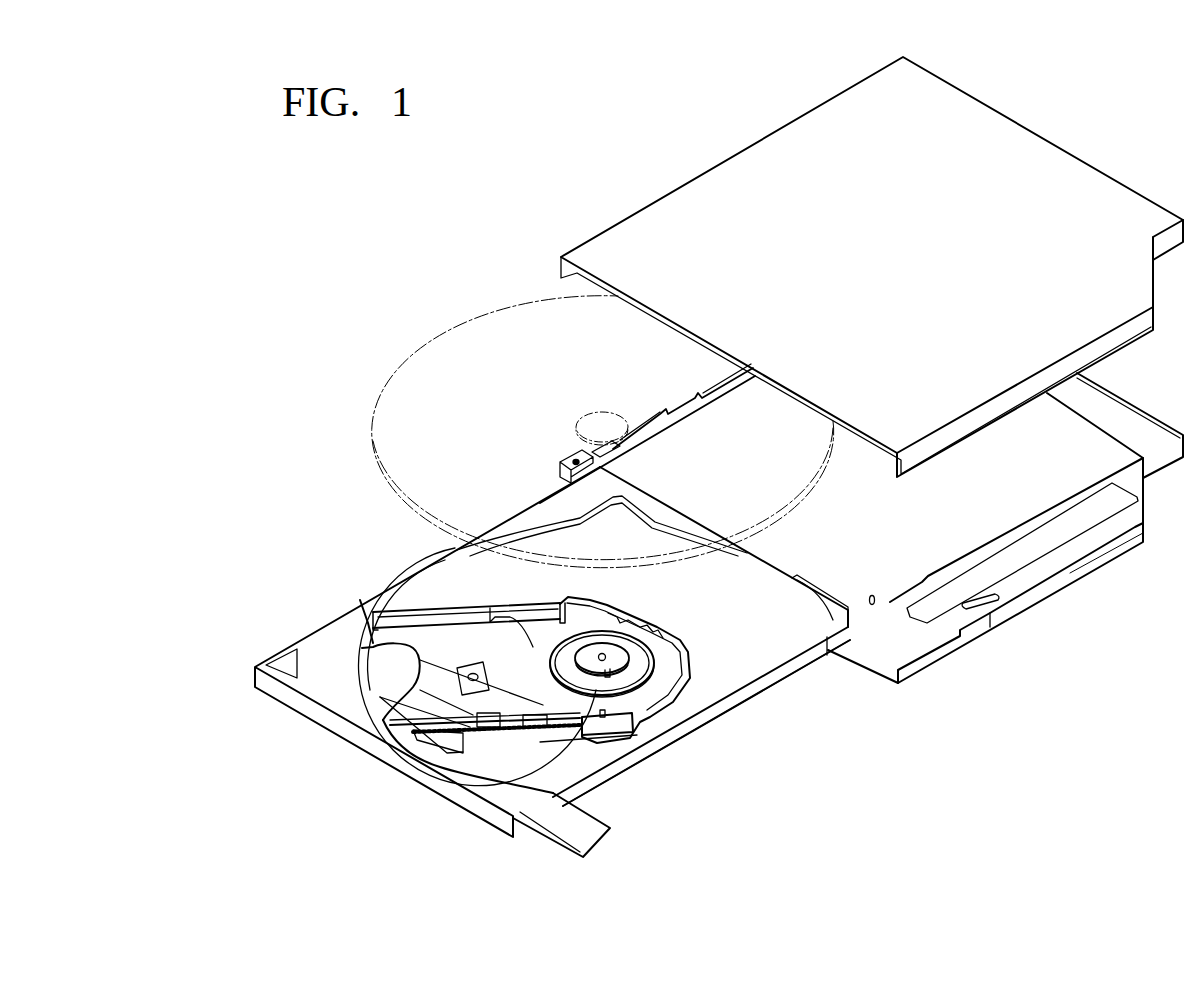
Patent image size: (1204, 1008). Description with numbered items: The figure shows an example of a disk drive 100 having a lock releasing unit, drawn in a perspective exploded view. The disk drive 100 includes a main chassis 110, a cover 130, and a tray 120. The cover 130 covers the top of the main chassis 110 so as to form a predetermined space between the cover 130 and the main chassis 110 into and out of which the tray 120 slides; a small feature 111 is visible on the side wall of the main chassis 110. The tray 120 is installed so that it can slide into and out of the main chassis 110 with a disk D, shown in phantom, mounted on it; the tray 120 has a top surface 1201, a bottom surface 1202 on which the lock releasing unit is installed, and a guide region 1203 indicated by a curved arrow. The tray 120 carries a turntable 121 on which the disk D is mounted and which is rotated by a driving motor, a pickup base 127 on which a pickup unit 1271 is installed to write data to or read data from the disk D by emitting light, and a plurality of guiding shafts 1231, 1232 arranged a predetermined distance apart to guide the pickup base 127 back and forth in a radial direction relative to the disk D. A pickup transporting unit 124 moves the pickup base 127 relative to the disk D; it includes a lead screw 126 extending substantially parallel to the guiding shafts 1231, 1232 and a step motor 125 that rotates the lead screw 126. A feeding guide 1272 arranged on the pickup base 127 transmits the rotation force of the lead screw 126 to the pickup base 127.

The disk drive 100 is at (396, 262).
The disk D is at (398, 390).
The main chassis 110 is at (1035, 615).
The sensor hole 111 is at (872, 594).
The tray 120 is at (697, 735).
The tray top surface 1201 is at (737, 670).
The bottom surface 1202 is at (737, 713).
The disc loading guide 1203 is at (525, 640).
The turntable 121 is at (617, 658).
The pickup transporting unit 124 is at (677, 798).
The step motor 125 is at (620, 727).
The lead screw 126 is at (560, 727).
The pickup base 127 is at (425, 663).
The pickup unit 1271 is at (400, 712).
The feeding guide 1272 is at (500, 733).
The guiding shaft 1231 is at (422, 620).
The guiding shaft 1232 is at (390, 722).
The cover 130 is at (637, 225).